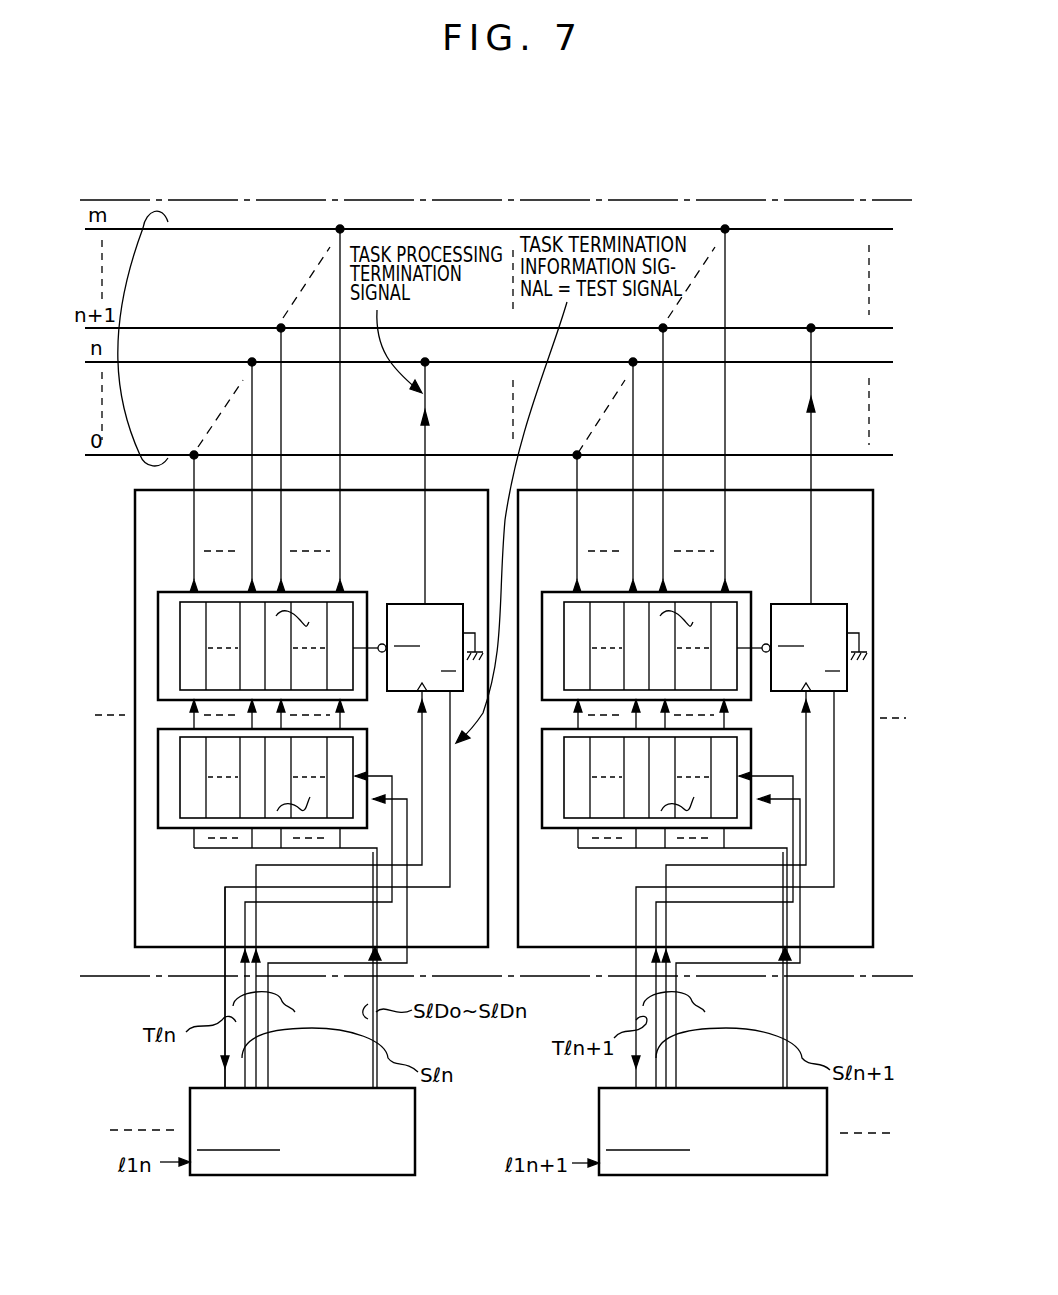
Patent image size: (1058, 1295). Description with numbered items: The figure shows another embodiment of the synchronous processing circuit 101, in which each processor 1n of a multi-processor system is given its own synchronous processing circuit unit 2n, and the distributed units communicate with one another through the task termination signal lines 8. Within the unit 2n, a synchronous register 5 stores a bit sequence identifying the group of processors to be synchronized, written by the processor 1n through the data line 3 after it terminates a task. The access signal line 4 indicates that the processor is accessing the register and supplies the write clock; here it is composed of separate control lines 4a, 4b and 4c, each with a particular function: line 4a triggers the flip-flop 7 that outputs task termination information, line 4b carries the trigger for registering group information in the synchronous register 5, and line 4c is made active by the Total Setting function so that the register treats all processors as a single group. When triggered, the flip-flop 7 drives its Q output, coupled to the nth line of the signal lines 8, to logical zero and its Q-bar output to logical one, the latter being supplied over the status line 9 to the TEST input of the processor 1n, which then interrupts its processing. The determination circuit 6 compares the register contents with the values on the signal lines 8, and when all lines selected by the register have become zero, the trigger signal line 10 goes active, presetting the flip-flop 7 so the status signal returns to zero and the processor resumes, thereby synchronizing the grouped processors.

The task termination signal lines 8 is at (152, 462).
The determination circuit 6 is at (168, 592).
The flip-flop 7 is at (408, 600).
The trigger signal line 10 is at (531, 889).
The synchronous register 5 is at (170, 832).
The control line 4a is at (283, 921).
The control line 4b is at (341, 906).
The control line 4c is at (410, 934).
The synchronous processing circuit unit 2n is at (135, 893).
The status line 9 is at (223, 990).
The data line 3 is at (373, 990).
The access signal line 4 is at (476, 1009).
The processor 1n is at (415, 1152).
The synchronous processing circuit 101 is at (893, 977).